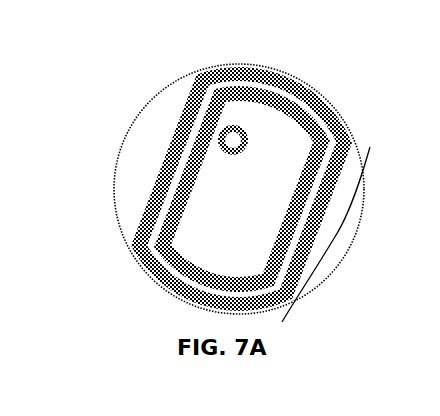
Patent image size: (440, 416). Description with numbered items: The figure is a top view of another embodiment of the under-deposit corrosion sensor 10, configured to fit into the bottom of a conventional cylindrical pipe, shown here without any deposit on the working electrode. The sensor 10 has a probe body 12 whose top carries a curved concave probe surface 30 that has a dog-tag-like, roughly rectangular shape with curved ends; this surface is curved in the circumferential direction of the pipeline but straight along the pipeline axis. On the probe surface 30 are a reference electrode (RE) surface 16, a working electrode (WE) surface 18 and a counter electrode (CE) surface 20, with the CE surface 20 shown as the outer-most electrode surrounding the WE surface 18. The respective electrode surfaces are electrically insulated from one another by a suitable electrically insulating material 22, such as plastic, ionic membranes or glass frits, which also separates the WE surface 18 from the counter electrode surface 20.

The under-deposit corrosion sensor 10 is at (168, 303).
The probe body 12 is at (118, 158).
The reference electrode (RE) surface 16 is at (234, 140).
The working electrode (WE) surface 18 is at (218, 173).
The counter electrode (CE) surface 20 is at (160, 213).
The electrically insulating material 22 is at (243, 142).
The curved concave probe surface 30 is at (333, 240).